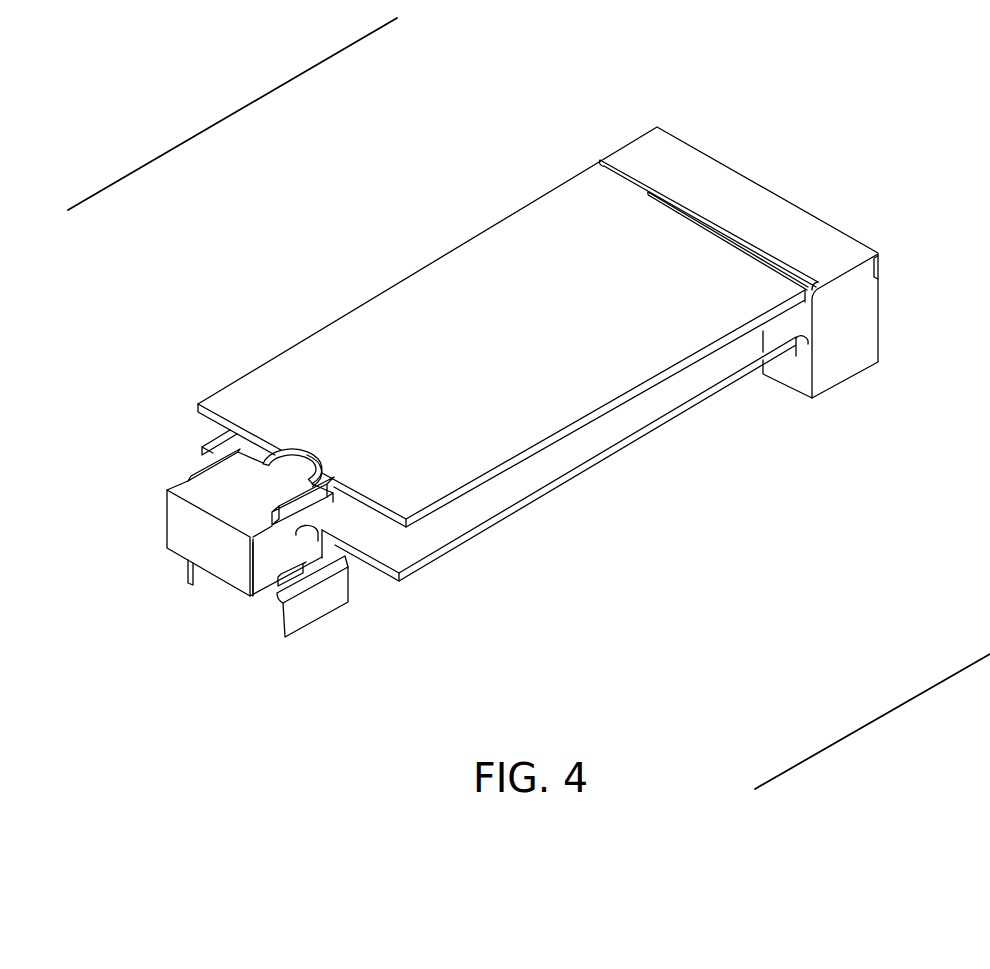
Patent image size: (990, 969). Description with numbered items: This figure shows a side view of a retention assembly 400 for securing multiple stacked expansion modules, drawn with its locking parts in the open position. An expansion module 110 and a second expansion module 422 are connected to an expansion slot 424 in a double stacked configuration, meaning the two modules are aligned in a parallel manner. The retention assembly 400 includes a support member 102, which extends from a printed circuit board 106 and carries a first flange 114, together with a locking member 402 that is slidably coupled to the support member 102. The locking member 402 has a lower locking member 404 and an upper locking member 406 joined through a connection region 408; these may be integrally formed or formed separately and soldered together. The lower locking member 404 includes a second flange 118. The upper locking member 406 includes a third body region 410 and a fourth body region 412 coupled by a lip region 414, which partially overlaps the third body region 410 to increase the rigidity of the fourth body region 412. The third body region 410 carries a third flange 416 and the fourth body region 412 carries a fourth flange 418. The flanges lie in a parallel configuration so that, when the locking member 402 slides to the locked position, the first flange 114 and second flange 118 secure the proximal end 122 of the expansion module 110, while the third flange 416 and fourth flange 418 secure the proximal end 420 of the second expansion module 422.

The support member 102 is at (285, 597).
The printed circuit board 106 is at (267, 92).
The expansion module 110 is at (687, 411).
The first flange 114 is at (375, 536).
The second flange 118 is at (317, 547).
The proximal end 122 is at (361, 521).
The retention assembly 400 is at (273, 535).
The locking member 402 is at (194, 464).
The lower locking member 404 is at (408, 555).
The upper locking member 406 is at (396, 486).
The connection region 408 is at (225, 524).
The third body region 410 is at (188, 430).
The fourth body region 412 is at (219, 605).
The lip region 414 is at (326, 481).
The third flange 416 is at (326, 440).
The fourth flange 418 is at (322, 472).
The proximal end 420 is at (276, 423).
The second expansion module 422 is at (465, 243).
The expansion slot 424 is at (640, 138).